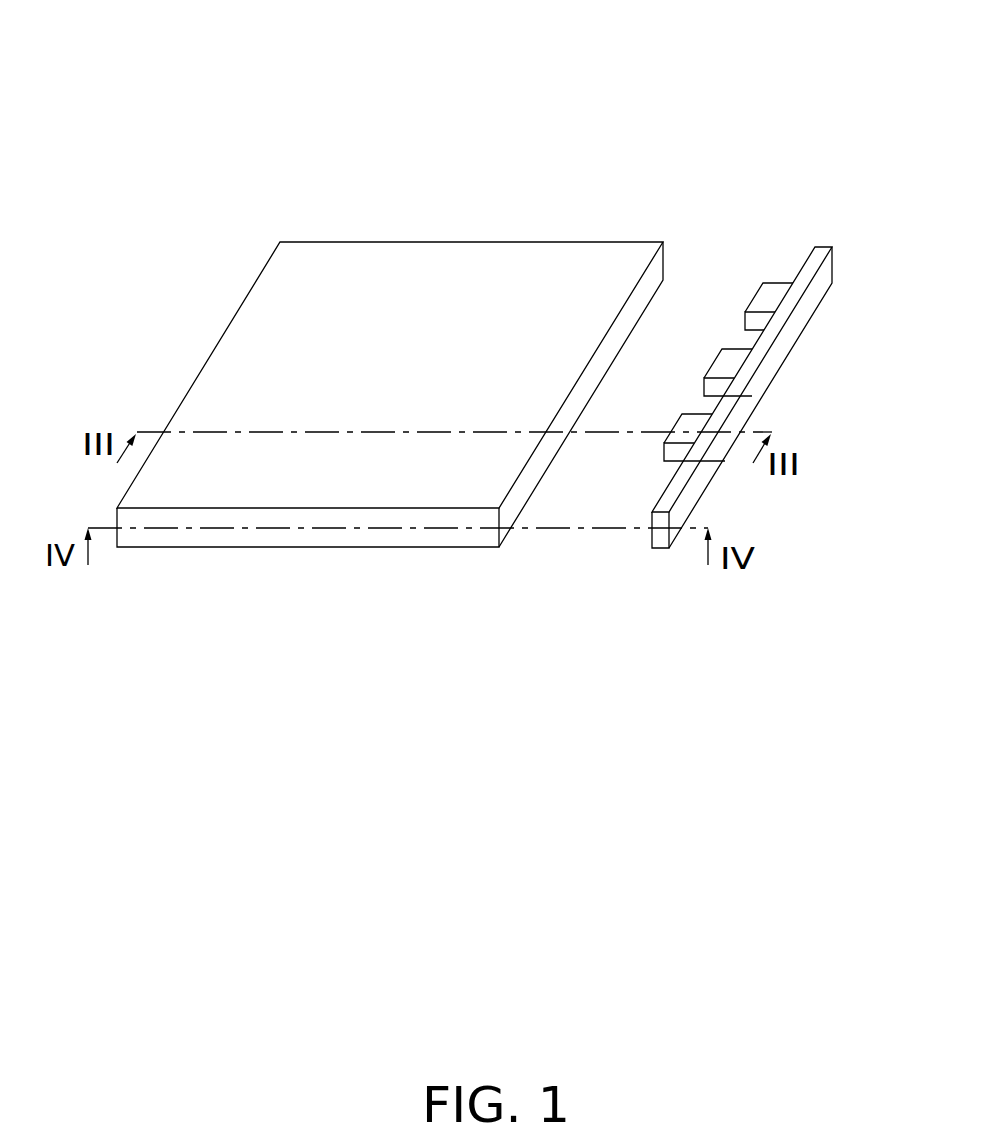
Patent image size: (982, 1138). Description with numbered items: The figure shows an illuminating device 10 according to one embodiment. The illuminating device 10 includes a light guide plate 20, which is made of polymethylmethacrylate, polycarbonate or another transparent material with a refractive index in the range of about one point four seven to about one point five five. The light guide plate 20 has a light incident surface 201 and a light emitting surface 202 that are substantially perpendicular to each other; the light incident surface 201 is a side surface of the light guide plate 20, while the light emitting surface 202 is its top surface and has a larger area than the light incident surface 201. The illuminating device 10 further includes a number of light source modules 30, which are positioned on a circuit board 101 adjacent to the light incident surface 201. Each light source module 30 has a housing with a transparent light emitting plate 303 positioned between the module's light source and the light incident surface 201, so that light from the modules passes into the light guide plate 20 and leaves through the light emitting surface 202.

The illuminating device 10 is at (368, 68).
The light guide plate 20 is at (312, 242).
The light incident surface 201 is at (655, 270).
The light emitting surface 202 is at (557, 262).
The light source module 30 is at (762, 295).
The transparent light emitting plate 303 is at (745, 320).
The circuit board 101 is at (793, 325).